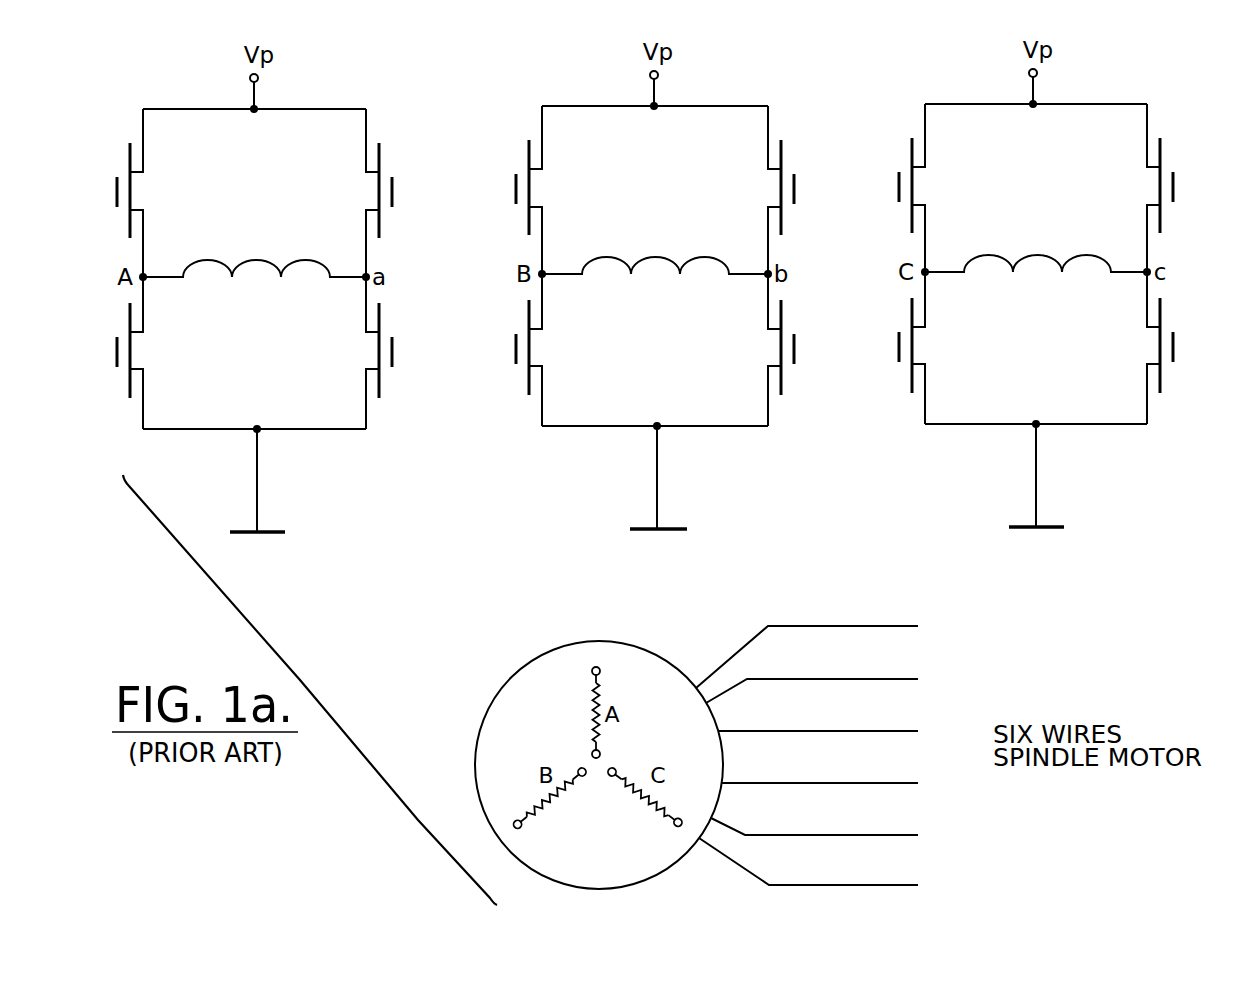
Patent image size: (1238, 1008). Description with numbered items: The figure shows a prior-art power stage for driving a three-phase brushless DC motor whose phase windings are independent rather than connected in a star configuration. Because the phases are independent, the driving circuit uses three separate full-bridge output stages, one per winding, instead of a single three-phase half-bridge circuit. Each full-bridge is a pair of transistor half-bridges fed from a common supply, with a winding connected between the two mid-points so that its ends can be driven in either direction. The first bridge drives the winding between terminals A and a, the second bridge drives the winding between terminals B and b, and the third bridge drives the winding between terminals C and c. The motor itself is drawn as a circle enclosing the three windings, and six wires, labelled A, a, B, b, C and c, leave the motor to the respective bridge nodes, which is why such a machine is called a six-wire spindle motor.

The phase winding A is at (820, 650).
The phase winding terminal a is at (825, 684).
The phase winding B is at (831, 730).
The phase winding terminal b is at (833, 781).
The phase winding C is at (828, 833).
The phase winding terminal c is at (821, 868).